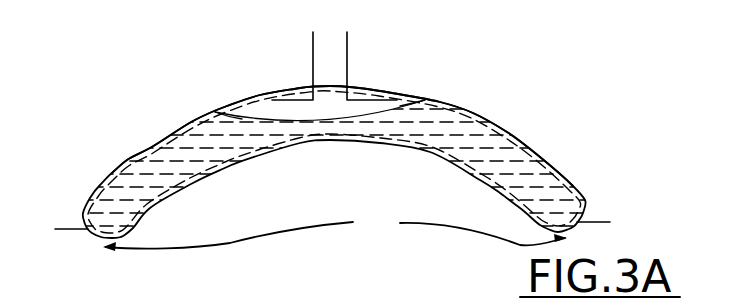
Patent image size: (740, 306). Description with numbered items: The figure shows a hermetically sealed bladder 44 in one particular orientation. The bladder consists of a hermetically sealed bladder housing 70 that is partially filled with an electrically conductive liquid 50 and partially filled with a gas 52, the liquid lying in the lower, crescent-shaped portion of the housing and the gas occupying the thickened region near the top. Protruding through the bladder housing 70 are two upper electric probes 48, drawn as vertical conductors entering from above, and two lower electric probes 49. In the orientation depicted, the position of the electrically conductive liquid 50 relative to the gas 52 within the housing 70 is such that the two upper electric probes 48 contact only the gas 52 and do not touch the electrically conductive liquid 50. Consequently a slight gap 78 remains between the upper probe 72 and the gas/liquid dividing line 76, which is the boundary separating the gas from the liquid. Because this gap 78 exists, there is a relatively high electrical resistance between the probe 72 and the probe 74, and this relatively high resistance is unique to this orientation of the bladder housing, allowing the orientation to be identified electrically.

The hermetically sealed bladder 44 is at (540, 136).
The upper electric probes 48 is at (284, 50).
The lower electric probes 49 is at (335, 230).
The electrically conductive liquid 50 is at (470, 155).
The gas 52 is at (352, 108).
The hermetically sealed bladder housing 70 is at (472, 113).
The upper probe 72 is at (347, 56).
The probe 74 is at (600, 222).
The gas/liquid dividing line 76 is at (247, 103).
The gap 78 is at (408, 100).